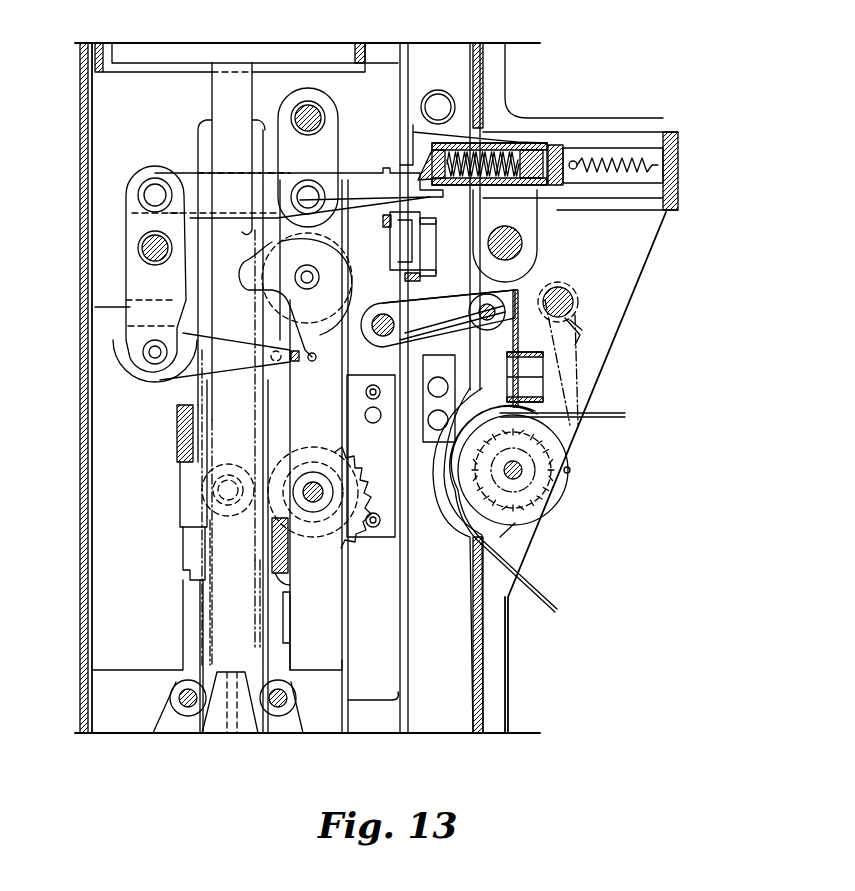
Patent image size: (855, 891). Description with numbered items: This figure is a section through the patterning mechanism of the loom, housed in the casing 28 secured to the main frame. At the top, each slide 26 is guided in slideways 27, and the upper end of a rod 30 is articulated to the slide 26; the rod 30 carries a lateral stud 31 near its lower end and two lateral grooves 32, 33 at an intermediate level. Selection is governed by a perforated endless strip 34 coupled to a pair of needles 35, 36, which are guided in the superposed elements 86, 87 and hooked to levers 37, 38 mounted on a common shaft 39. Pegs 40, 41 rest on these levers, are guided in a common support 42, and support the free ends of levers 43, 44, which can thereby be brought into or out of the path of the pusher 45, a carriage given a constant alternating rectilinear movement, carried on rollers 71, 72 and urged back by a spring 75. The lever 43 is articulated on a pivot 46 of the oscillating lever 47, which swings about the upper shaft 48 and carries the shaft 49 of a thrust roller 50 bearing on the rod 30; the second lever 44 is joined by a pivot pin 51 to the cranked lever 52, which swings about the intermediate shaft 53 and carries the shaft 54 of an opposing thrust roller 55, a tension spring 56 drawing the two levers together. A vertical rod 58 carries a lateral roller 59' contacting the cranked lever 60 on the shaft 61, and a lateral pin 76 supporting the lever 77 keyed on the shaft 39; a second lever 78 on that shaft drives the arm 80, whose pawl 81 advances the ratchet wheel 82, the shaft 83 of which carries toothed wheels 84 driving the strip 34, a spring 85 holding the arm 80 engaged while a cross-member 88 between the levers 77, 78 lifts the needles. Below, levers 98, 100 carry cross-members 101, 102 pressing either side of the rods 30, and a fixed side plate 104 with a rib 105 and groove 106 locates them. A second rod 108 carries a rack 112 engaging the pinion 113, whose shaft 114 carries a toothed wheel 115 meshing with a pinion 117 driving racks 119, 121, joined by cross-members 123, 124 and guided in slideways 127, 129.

The slide 26 is at (128, 30).
The slideways 27 is at (103, 72).
The casing 28 is at (78, 125).
The rod 30 is at (175, 632).
The lateral stud 31 is at (262, 680).
The lateral groove 32 is at (190, 560).
The lateral groove 33 is at (262, 572).
The perforated endless strip 34 is at (545, 598).
The needle 35 is at (565, 368).
The needle 36 is at (576, 370).
The lever 37 is at (390, 346).
The lever 38 is at (449, 296).
The shaft 39 is at (380, 315).
The peg 40 is at (428, 260).
The peg 41 is at (448, 247).
The common support 42 is at (390, 245).
The lever 43 is at (358, 178).
The second lever 44 is at (185, 173).
The pusher 45 is at (520, 140).
The pivot 46 is at (305, 185).
The oscillating lever 47 is at (338, 108).
The upper shaft 48 is at (310, 130).
The shaft 49 is at (307, 289).
The thrust roller 50 is at (268, 308).
The pivot pin 51 is at (152, 190).
The cranked lever 52 is at (126, 232).
The intermediate shaft 53 is at (152, 262).
The shaft 54 is at (155, 340).
The thrust roller 55 is at (125, 388).
The tension spring 56 is at (300, 362).
The vertical rod 58 is at (478, 43).
The lateral roller 59' is at (438, 94).
The cranked lever 60 is at (537, 240).
The shaft 61 is at (505, 228).
The roller 71 is at (555, 185).
The roller 72 is at (668, 135).
The spring 75 is at (612, 158).
The lateral pin 76 is at (437, 355).
The lever 77 is at (445, 325).
The second lever 78 is at (568, 292).
The arm 80 is at (585, 397).
The pawl 81 is at (565, 478).
The ratchet wheel 82 is at (557, 503).
The shaft 83 is at (510, 479).
The toothed wheels 84 is at (510, 530).
The spring 85 is at (580, 340).
The superposed element 86 is at (507, 365).
The superposed element 87 is at (507, 395).
The cross-member 88 is at (492, 322).
The lever 98 is at (160, 718).
The lever 100 is at (298, 718).
The cross-member 101 is at (178, 688).
The cross-member 102 is at (282, 708).
The fixed side plate 104 is at (208, 733).
The longitudinal lateral rib 105 is at (238, 733).
The groove 106 is at (218, 672).
The second rod 108 is at (400, 700).
The rack 112 is at (383, 537).
The pinion 113 is at (320, 515).
The shaft 114 is at (313, 482).
The toothed wheel 115 is at (288, 540).
The pinion 117 is at (226, 516).
The rack 119 is at (185, 510).
The rack 121 is at (290, 622).
The cross-member 123 is at (177, 440).
The cross-member 124 is at (290, 585).
The slideway 127 is at (96, 490).
The slideway 129 is at (342, 662).